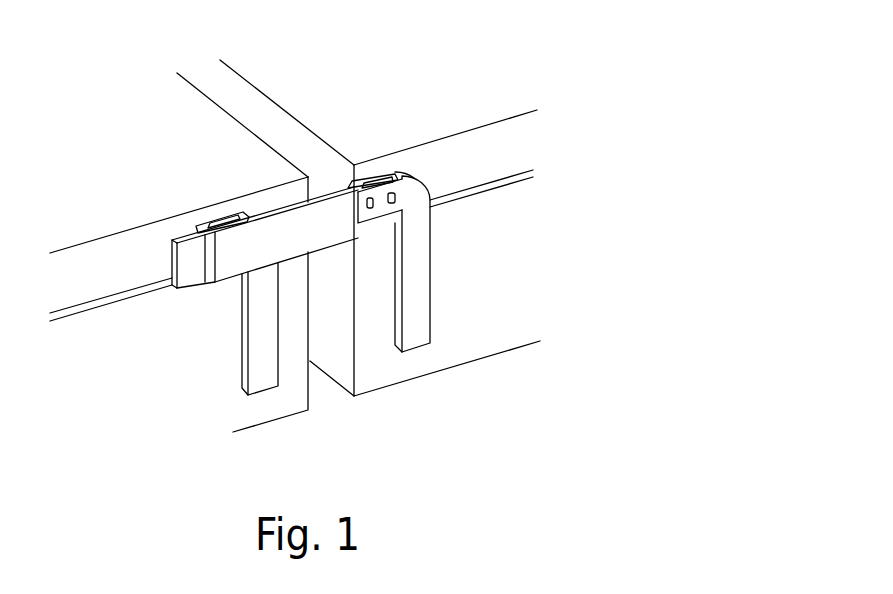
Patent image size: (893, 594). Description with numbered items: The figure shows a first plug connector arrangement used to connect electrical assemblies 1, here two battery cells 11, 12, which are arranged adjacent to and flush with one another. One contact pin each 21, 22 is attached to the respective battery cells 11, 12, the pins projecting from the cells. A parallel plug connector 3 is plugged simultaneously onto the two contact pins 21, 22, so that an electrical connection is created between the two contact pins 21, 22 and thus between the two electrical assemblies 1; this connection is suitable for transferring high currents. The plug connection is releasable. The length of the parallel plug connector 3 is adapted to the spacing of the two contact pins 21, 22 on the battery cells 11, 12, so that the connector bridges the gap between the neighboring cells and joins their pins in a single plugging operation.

The electrical assemblies 1 is at (560, 82).
The battery cell 11 is at (147, 193).
The battery cell 12 is at (467, 108).
The parallel plug connector 3 is at (283, 232).
The contact pin 21 is at (408, 328).
The contact pin 22 is at (253, 368).